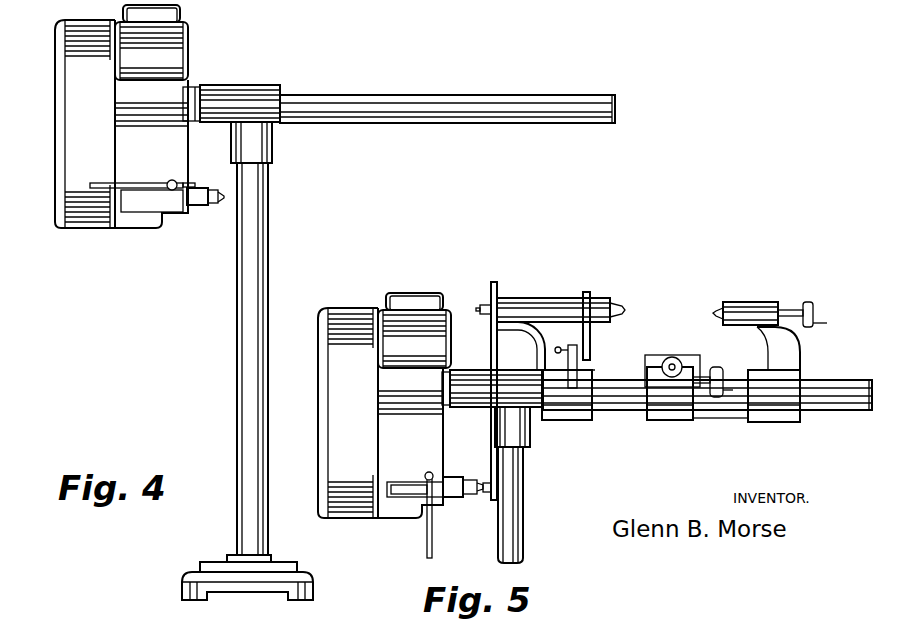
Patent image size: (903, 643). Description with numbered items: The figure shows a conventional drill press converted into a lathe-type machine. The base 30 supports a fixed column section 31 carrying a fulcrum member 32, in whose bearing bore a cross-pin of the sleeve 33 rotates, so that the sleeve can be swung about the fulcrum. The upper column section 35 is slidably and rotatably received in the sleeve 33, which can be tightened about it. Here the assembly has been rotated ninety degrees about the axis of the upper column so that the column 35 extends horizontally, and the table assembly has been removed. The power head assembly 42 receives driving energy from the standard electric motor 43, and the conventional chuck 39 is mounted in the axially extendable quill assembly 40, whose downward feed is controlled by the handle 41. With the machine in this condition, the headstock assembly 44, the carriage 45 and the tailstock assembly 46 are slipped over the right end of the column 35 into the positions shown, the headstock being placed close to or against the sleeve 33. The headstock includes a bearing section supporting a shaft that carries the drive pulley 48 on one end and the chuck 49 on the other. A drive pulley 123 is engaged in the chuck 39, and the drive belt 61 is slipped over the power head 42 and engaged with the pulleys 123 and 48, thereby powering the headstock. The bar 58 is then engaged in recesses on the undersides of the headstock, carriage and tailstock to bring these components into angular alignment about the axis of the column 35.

In FIG. 4, the base 30 is at (203, 562).
In FIG. 4, the fixed column section 31 is at (268, 253).
In FIG. 5, the fixed column section 31 is at (524, 512).
In FIG. 4, the fulcrum member 32 is at (274, 147).
In FIG. 5, the fulcrum member 32 is at (530, 447).
In FIG. 4, the sleeve 33 is at (258, 85).
In FIG. 5, the sleeve 33 is at (484, 407).
In FIG. 4, the upper column section 35 is at (446, 95).
In FIG. 5, the upper column section 35 is at (847, 380).
In FIG. 4, the chuck 39 is at (212, 208).
In FIG. 5, the chuck 39 is at (484, 478).
In FIG. 4, the quill assembly 40 is at (195, 214).
In FIG. 4, the handle 41 is at (128, 183).
In FIG. 5, the handle 41 is at (433, 541).
In FIG. 4, the power head assembly 42 is at (54, 160).
In FIG. 5, the power head assembly 42 is at (357, 306).
In FIG. 4, the electric motor 43 is at (190, 30).
In FIG. 5, the electric motor 43 is at (428, 293).
In FIG. 5, the headstock assembly 44 is at (567, 422).
In FIG. 5, the carriage 45 is at (663, 422).
In FIG. 5, the tailstock assembly 46 is at (770, 424).
In FIG. 5, the drive pulley 48 is at (499, 290).
In FIG. 5, the chuck 49 is at (596, 298).
In FIG. 5, the bar 58 is at (725, 419).
In FIG. 5, the drive belt 61 is at (491, 356).
In FIG. 5, the drive pulley 123 is at (486, 495).